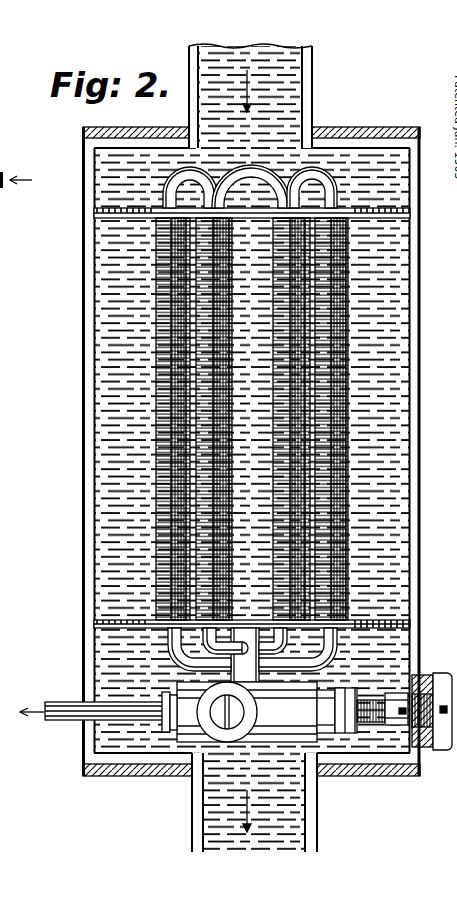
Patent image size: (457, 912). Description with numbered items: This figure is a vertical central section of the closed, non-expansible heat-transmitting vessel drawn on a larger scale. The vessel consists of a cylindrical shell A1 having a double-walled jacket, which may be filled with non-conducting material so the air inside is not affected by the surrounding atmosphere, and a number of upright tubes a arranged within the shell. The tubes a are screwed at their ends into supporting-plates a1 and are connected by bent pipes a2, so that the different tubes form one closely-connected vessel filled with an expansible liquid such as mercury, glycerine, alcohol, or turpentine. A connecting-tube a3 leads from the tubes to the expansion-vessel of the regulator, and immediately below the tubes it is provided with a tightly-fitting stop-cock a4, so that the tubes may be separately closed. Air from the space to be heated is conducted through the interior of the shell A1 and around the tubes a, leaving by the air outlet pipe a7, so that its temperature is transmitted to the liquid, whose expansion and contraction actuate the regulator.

The upright tubes a is at (249, 419).
The supporting-plates a1 is at (252, 431).
The bent pipes a2 is at (250, 423).
The connecting-tube a3 is at (98, 705).
The stop-cock a4 is at (314, 711).
The air outlet pipe a7 is at (272, 802).
The cylindrical shell A1 is at (95, 420).